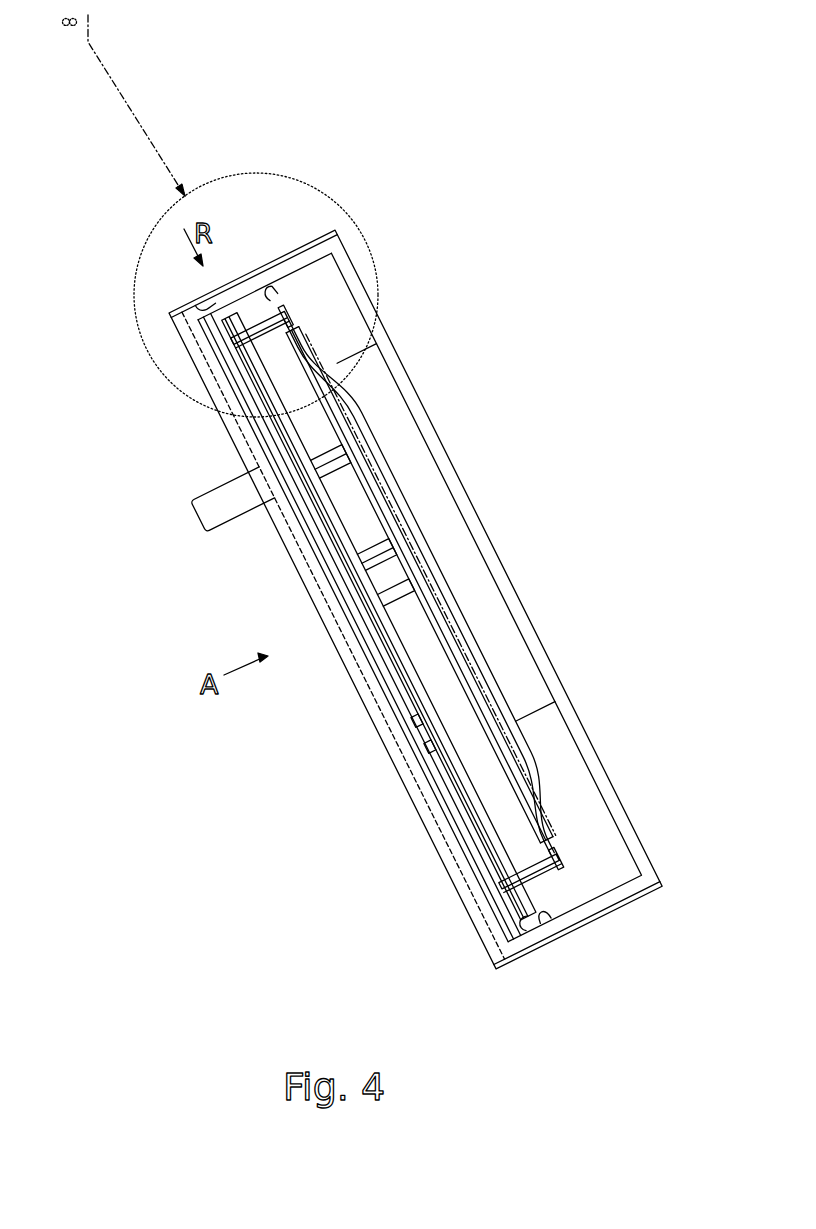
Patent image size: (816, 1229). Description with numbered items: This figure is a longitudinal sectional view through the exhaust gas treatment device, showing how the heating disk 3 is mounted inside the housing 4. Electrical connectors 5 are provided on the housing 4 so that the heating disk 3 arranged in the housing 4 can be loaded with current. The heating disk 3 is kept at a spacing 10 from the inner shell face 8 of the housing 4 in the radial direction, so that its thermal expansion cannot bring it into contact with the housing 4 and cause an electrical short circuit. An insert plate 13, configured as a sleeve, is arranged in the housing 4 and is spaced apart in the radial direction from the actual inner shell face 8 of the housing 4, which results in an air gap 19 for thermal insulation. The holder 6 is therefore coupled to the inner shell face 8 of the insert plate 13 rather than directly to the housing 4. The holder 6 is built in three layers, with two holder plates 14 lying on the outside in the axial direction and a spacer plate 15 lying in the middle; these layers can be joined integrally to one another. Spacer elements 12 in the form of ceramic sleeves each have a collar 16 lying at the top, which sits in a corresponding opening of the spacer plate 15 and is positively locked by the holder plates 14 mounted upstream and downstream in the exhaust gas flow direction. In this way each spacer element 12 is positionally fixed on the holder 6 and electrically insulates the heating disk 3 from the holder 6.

The heating disk 3 is at (333, 431).
The housing 4 is at (302, 256).
The electrical connectors 5 is at (216, 518).
The holder 6 is at (258, 462).
The inner shell face 8 is at (270, 290).
The spacing 10 is at (566, 884).
The spacer element 12 is at (293, 331).
The insert plate 13 is at (287, 272).
The holder plates 14 is at (430, 748).
The spacer plate 15 is at (450, 782).
The collar 16 is at (262, 438).
The air gap 19 is at (212, 303).